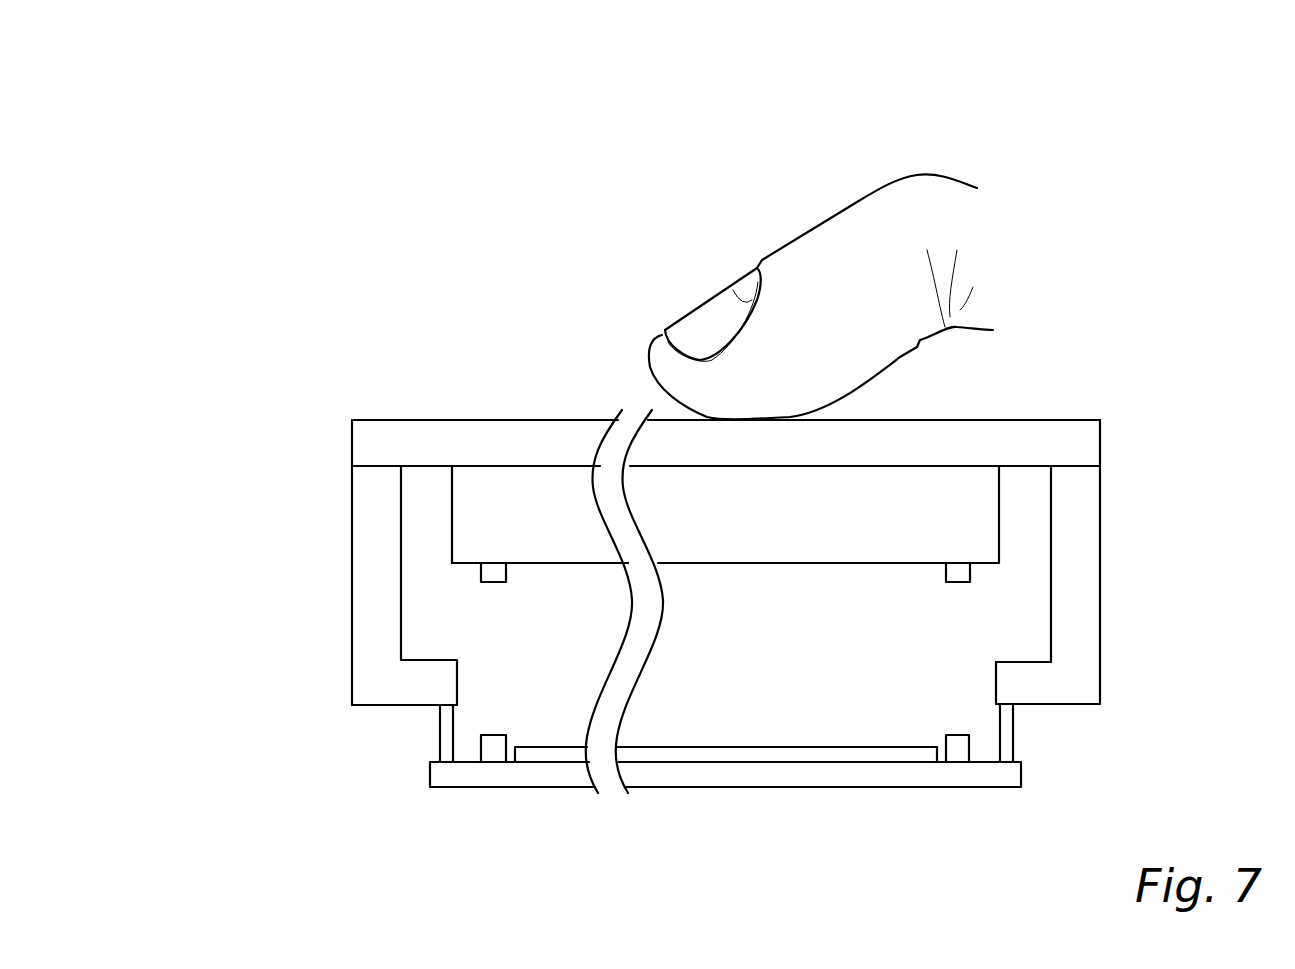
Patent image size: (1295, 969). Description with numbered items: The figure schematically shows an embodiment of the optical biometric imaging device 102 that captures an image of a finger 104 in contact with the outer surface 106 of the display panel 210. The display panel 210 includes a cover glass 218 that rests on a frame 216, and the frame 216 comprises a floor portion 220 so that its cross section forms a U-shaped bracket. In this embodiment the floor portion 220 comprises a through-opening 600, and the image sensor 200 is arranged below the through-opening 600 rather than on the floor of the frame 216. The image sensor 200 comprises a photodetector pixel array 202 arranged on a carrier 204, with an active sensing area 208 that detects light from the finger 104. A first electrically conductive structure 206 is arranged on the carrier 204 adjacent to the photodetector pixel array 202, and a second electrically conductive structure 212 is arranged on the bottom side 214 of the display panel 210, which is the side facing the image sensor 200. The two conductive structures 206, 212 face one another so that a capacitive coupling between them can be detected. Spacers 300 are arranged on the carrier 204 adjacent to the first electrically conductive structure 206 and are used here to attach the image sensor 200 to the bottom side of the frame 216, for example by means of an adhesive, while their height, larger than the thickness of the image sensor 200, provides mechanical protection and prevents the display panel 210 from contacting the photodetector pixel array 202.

The optical biometric imaging device 102 is at (462, 160).
The finger 104 is at (803, 237).
The outer surface 106 is at (410, 420).
The image sensor 200 is at (995, 640).
The photodetector pixel array 202 is at (855, 753).
The carrier 204 is at (808, 775).
The first electrically conductive structure 206 is at (497, 735).
The active sensing area 208 is at (832, 747).
The display panel 210 is at (972, 499).
The second electrically conductive structure 212 is at (497, 572).
The bottom side 214 is at (558, 563).
The frame 216 is at (385, 510).
The cover glass 218 is at (988, 448).
The floor portion 220 is at (401, 697).
The spacer 300 is at (447, 749).
The through-opening 600 is at (964, 678).